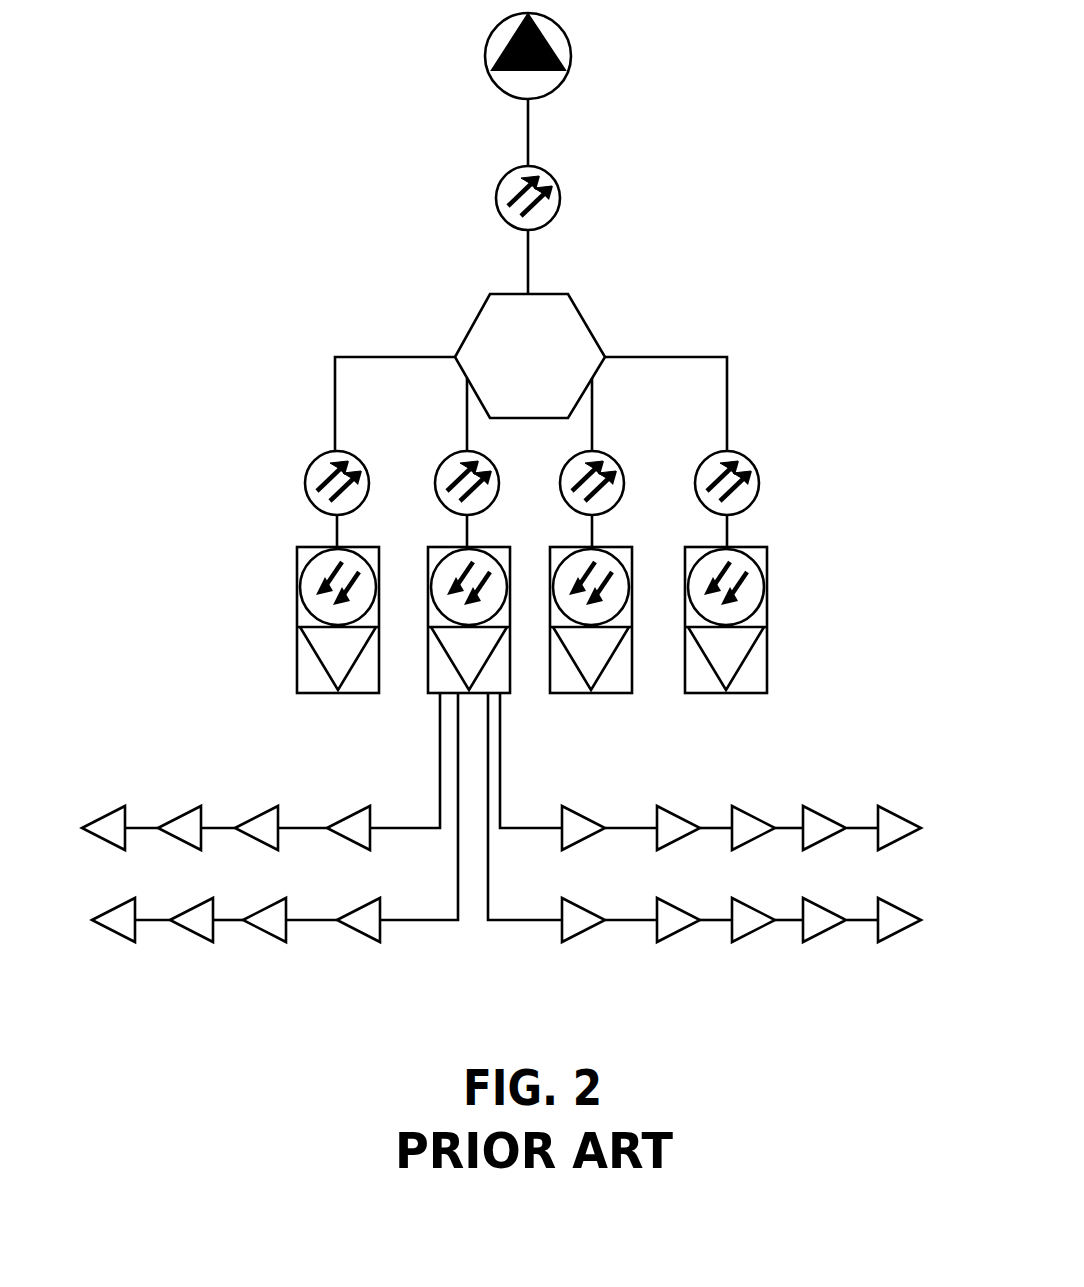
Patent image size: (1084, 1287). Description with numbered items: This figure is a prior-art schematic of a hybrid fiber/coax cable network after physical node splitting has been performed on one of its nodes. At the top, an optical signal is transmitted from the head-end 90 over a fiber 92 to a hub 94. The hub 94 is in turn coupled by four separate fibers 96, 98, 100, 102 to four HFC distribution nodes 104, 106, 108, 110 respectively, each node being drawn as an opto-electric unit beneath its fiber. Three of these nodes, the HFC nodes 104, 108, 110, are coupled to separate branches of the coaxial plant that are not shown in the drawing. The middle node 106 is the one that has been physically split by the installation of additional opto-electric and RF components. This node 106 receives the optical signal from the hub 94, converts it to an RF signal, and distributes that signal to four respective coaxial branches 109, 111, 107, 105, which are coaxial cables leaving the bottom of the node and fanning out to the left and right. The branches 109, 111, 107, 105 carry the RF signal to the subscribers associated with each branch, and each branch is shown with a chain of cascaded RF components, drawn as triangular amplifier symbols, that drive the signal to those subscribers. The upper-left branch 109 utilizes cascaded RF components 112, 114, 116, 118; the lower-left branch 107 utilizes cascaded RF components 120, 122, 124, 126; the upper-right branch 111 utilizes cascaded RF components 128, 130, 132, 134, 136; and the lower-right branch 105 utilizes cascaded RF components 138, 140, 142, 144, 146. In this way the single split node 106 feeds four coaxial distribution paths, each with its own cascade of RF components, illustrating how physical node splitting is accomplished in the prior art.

The head-end 90 is at (571, 48).
The fiber 92 is at (560, 190).
The hub 94 is at (572, 301).
The fiber 96 is at (366, 470).
The fiber 98 is at (496, 470).
The fiber 100 is at (621, 470).
The fiber 102 is at (780, 455).
The HFC distribution node 104 is at (297, 628).
The coaxial branch 105 is at (513, 863).
The HFC distribution node 106 is at (498, 546).
The coaxial branch 107 is at (457, 845).
The HFC distribution node 108 is at (620, 546).
The coaxial branch 109 is at (439, 730).
The HFC distribution node 110 is at (768, 610).
The coaxial branch 111 is at (501, 770).
The RF component 112 is at (100, 838).
The RF component 114 is at (176, 838).
The RF component 116 is at (253, 838).
The RF component 118 is at (345, 838).
The RF component 120 is at (110, 930).
The RF component 122 is at (188, 930).
The RF component 124 is at (261, 930).
The RF component 126 is at (355, 930).
The RF component 128 is at (582, 817).
The RF component 130 is at (677, 817).
The RF component 132 is at (752, 817).
The RF component 134 is at (823, 817).
The RF component 136 is at (898, 817).
The RF component 138 is at (582, 909).
The RF component 140 is at (677, 909).
The RF component 142 is at (752, 909).
The RF component 144 is at (823, 909).
The RF component 146 is at (898, 909).